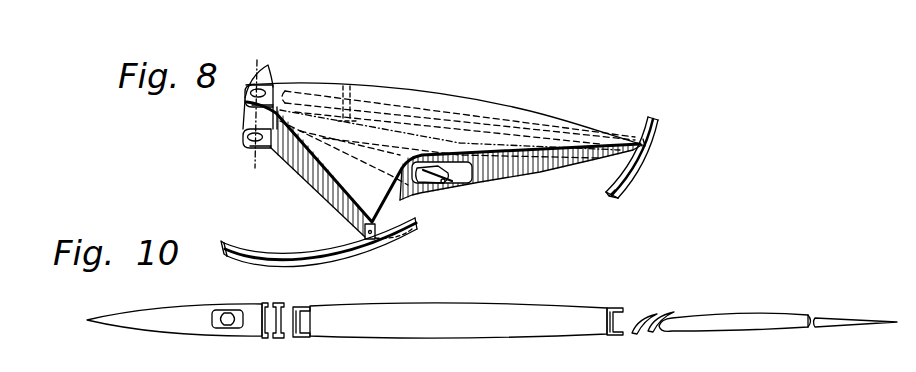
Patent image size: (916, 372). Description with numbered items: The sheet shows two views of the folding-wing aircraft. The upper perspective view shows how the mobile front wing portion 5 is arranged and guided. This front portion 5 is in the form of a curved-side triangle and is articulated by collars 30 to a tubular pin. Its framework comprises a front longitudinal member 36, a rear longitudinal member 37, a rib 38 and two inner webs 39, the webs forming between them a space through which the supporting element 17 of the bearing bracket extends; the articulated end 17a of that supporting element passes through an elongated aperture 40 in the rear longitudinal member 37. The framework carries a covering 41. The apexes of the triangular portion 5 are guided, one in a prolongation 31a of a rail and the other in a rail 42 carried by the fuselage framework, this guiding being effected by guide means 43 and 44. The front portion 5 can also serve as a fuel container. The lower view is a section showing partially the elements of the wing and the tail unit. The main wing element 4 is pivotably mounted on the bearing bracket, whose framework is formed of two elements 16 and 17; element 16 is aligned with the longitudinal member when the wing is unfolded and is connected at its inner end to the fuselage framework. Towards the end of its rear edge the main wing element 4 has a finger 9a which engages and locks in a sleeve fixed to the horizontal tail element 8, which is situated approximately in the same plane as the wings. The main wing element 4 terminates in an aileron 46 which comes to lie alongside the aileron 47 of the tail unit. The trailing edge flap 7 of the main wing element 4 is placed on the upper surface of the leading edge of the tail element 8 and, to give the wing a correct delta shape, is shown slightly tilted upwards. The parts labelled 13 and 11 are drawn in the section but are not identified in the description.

In FIG. 8, the front wing portion 5 is at (440, 86).
In FIG. 10, the front wing portion 5 is at (200, 312).
In FIG. 8, the collars 30 is at (269, 66).
In FIG. 8, the inner webs 39 is at (344, 86).
In FIG. 8, the front longitudinal member 36 is at (398, 111).
In FIG. 8, the covering 41 is at (455, 110).
In FIG. 8, the rib 38 is at (308, 177).
In FIG. 8, the rear longitudinal member 37 is at (510, 158).
In FIG. 8, the elongated aperture 40 is at (468, 187).
In FIG. 8, the articulated end 17a is at (437, 192).
In FIG. 8, the prolongation of the rail 31a is at (317, 252).
In FIG. 8, the guide means 43 is at (380, 248).
In FIG. 8, the rail 42 is at (630, 183).
In FIG. 8, the guide means 44 is at (637, 130).
In FIG. 10, the supporting element 17 is at (238, 328).
In FIG. 10, the element of the bearing bracket framework 16 is at (283, 328).
In FIG. 10, the joint flange 13 is at (313, 330).
In FIG. 10, the main wing element 4 is at (458, 310).
In FIG. 10, the end bracket 11 is at (608, 332).
In FIG. 10, the trailing edge flap 7 is at (670, 312).
In FIG. 10, the horizontal tail element 8 is at (717, 326).
In FIG. 10, the aileron of the tail unit 47 is at (840, 318).
In FIG. 10, the finger 9a is at (792, 361).
In FIG. 10, the aileron 46 is at (893, 362).